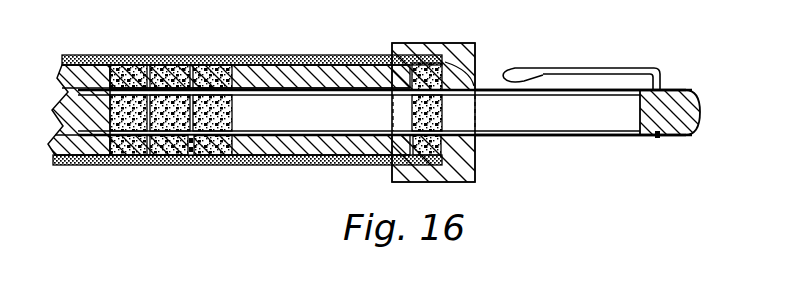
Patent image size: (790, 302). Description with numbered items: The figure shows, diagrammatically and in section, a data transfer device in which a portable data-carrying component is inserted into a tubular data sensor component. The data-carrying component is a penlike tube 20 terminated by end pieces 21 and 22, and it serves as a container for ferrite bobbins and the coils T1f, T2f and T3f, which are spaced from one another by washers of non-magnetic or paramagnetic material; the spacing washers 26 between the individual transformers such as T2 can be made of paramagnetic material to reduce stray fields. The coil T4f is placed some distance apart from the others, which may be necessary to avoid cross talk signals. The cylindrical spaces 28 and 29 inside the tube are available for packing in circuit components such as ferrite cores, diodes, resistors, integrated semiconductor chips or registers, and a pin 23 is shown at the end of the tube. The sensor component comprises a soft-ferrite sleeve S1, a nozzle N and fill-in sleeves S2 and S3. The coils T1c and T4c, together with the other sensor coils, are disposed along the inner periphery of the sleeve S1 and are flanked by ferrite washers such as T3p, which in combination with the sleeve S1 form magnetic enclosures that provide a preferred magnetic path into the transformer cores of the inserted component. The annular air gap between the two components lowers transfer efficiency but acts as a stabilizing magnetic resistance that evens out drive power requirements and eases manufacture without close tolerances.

The nozzle N is at (453, 44).
The penlike tube 20 is at (570, 137).
The end piece 21 is at (684, 120).
The end piece 22 is at (65, 150).
The pin 23 is at (612, 68).
The spacing washer 26 is at (185, 166).
The cylindrical space 28 is at (312, 113).
The cylindrical space 29 is at (557, 113).
The soft-ferrite sleeve S1 is at (247, 35).
The fill-in sleeve S2 is at (318, 165).
The fill-in sleeve S3 is at (90, 120).
The coil T1c is at (102, 28).
The coil T1f is at (134, 152).
The transformer T2 is at (186, 113).
The coil T2f is at (183, 130).
The ferrite washer T3p is at (192, 56).
The coil T3f is at (235, 112).
The coil T4c is at (332, 35).
The coil T4f is at (447, 120).